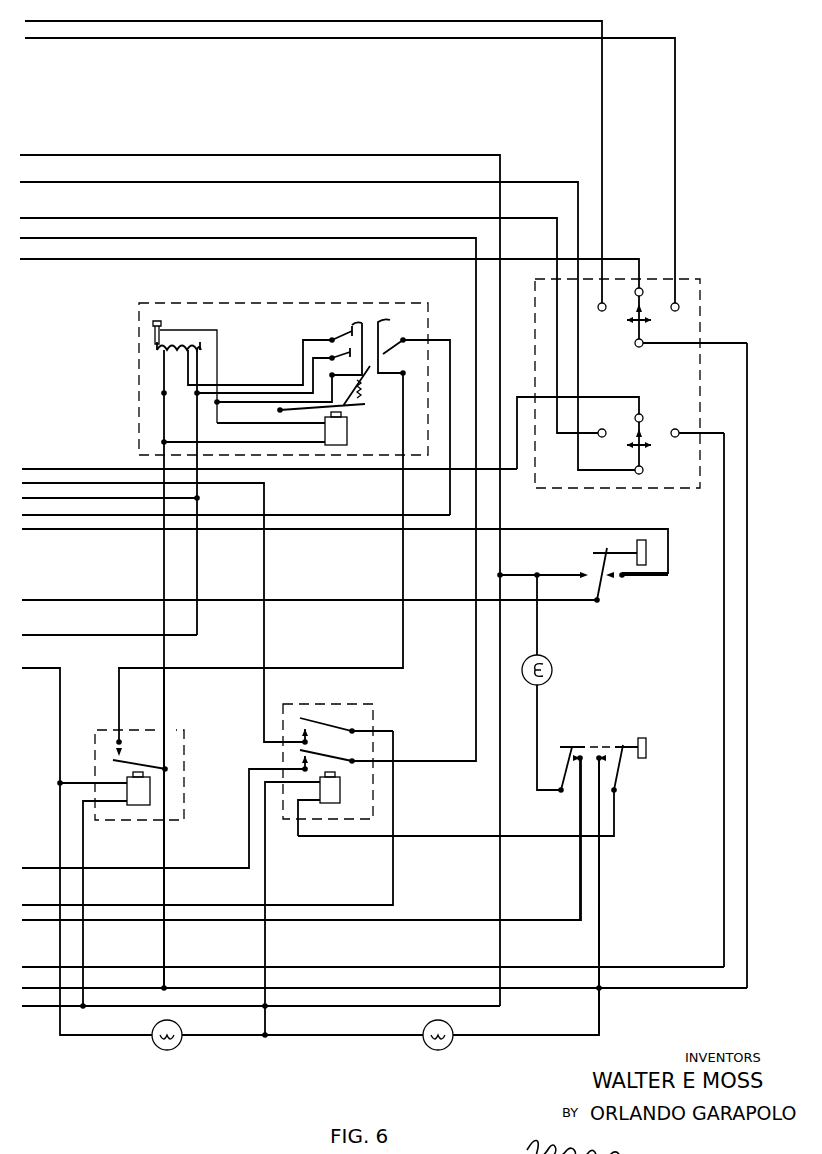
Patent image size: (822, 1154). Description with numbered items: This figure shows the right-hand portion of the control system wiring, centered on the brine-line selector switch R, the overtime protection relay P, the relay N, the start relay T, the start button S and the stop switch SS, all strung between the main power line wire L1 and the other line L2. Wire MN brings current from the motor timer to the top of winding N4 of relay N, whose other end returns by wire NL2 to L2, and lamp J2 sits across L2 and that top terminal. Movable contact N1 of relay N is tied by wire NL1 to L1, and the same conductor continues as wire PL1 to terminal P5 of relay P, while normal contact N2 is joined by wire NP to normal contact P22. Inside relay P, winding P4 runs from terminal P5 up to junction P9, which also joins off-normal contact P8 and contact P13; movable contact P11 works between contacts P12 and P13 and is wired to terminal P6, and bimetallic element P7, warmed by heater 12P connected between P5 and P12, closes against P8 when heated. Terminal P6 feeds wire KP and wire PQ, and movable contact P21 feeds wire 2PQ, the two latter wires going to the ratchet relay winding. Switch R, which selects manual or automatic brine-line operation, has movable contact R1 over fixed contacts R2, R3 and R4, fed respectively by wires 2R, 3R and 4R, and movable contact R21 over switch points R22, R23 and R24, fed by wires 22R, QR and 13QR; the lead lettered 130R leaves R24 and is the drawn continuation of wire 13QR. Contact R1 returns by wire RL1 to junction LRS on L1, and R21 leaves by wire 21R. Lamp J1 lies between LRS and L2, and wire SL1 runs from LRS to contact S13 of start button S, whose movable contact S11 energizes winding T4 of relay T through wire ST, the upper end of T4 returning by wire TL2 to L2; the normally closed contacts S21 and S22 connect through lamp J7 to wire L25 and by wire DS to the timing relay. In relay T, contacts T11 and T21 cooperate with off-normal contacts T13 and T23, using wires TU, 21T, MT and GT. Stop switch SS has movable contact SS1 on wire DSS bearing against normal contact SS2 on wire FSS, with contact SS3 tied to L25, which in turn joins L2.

The wire 2R is at (313, 154).
The wire 4R is at (350, 162).
The wire L25 is at (260, 572).
The wire 21R is at (594, 370).
The wire 22R is at (309, 317).
The wire TU is at (248, 491).
The wire 3R is at (329, 265).
The two-section switch R is at (684, 282).
The movable contact R1 is at (647, 333).
The fixed contact R2 is at (598, 316).
The fixed contact R3 is at (629, 292).
The fixed contact R4 is at (682, 316).
The movable contact R21 is at (642, 460).
The switch point R22 is at (598, 443).
The terminal R23 is at (596, 433).
The switch point R24 is at (692, 443).
The wire RL1 is at (748, 517).
The wire 130R is at (724, 649).
The overtime protection relay P is at (271, 306).
The winding P4 is at (347, 432).
The terminal P5 is at (166, 444).
The terminal P6 is at (210, 386).
The bimetallic element P7 is at (146, 350).
The off-normal contact P8 is at (150, 332).
The junction P9 is at (224, 392).
The movable contact P11 is at (342, 336).
The contact P12 is at (348, 320).
The contact P13 is at (338, 351).
The movable contact P21 is at (416, 415).
The normal contact P22 is at (392, 316).
The heater 12P is at (172, 337).
The wire NP is at (402, 554).
The wire QR is at (269, 461).
The wire GT is at (163, 605).
The wire PQ is at (111, 492).
The wire 2PQ is at (236, 507).
The wire FSS is at (345, 543).
The wire DSS is at (309, 592).
The wire KP is at (109, 627).
The wire MN is at (87, 842).
The wire PL1 is at (164, 674).
The wire MT is at (163, 818).
The wire 21T is at (207, 818).
The wire DS is at (301, 839).
The wire 13QR is at (373, 959).
The main power line wire L1 is at (384, 981).
The line L2 is at (261, 999).
The lamp J2 is at (285, 1045).
The lamp J1 is at (511, 914).
The lamp J7 is at (547, 682).
The relay N is at (192, 732).
The movable contact N1 is at (160, 760).
The normal contact N2 is at (122, 752).
The winding N4 is at (103, 796).
The wire NL1 is at (168, 836).
The wire NL2 is at (84, 836).
The start relay T is at (321, 704).
The winding T4 is at (340, 790).
The movable contact T11 is at (332, 756).
The off-normal contact T13 is at (290, 762).
The movable contact T21 is at (330, 724).
The off-normal contact T23 is at (282, 730).
The wire TL2 is at (266, 885).
The wire ST is at (442, 840).
The stop switch SS is at (642, 544).
The movable contact SS1 is at (586, 558).
The normal contact SS2 is at (637, 583).
The contact SS3 is at (542, 582).
The start button S is at (648, 748).
The movable contact S11 is at (610, 764).
The contact S13 is at (616, 745).
The normally closed contact S21 is at (564, 760).
The normally closed contact S22 is at (578, 745).
The wire SL1 is at (598, 920).
The junction LRS is at (602, 990).